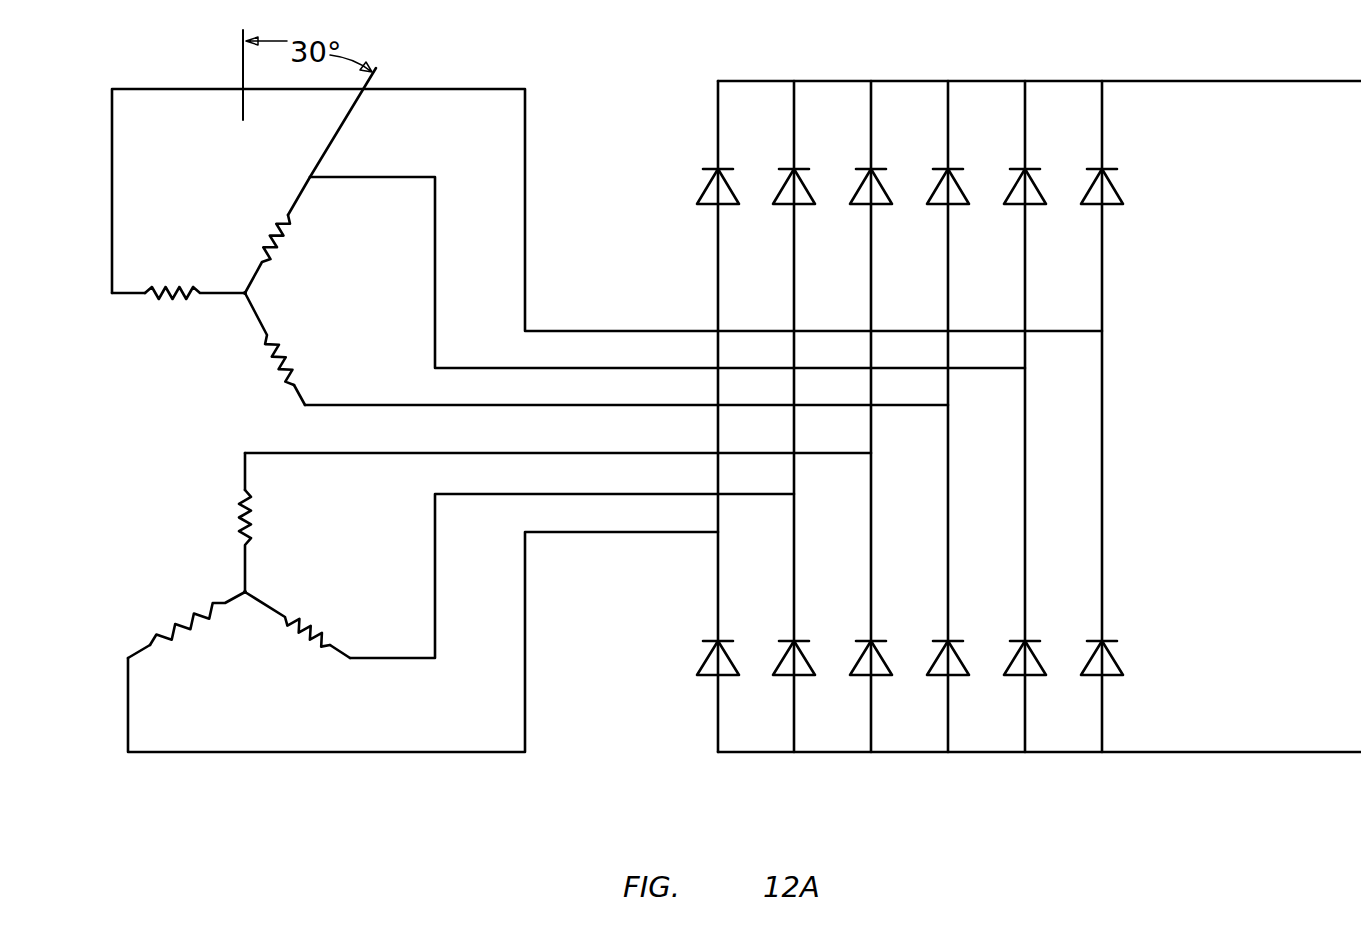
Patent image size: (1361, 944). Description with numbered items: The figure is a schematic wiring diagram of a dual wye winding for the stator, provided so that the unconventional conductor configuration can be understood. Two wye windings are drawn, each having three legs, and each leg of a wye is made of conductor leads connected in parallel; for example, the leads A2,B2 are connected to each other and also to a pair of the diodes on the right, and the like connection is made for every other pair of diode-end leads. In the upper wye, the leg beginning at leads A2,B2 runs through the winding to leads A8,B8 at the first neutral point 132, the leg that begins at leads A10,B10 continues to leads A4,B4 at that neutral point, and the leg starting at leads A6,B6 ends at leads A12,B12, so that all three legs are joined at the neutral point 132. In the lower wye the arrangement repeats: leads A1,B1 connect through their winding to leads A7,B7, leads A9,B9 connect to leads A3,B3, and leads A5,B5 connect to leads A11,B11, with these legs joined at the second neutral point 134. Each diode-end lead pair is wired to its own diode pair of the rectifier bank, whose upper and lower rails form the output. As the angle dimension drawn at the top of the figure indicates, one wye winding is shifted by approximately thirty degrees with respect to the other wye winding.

The neutral point 132 is at (255, 287).
The neutral point 134 is at (248, 592).
The conductor leads A2 and B2 A2,B2 is at (300, 190).
The conductor leads A8 and B8 A8,B8 is at (255, 270).
The conductor leads A4 and B4 A4,B4 is at (218, 295).
The conductor leads A10 and B10 A10,B10 is at (132, 295).
The conductor leads A12 and B12 A12,B12 is at (257, 307).
The conductor leads A6 and B6 A6,B6 is at (297, 388).
The conductor leads A1 and B1 A1,B1 is at (245, 468).
The conductor leads A7 and B7 A7,B7 is at (245, 572).
The conductor leads A3 and B3 A3,B3 is at (228, 603).
The conductor leads A9 and B9 A9,B9 is at (147, 642).
The conductor leads A11 and B11 A11,B11 is at (263, 597).
The conductor leads A5 and B5 A5,B5 is at (347, 650).